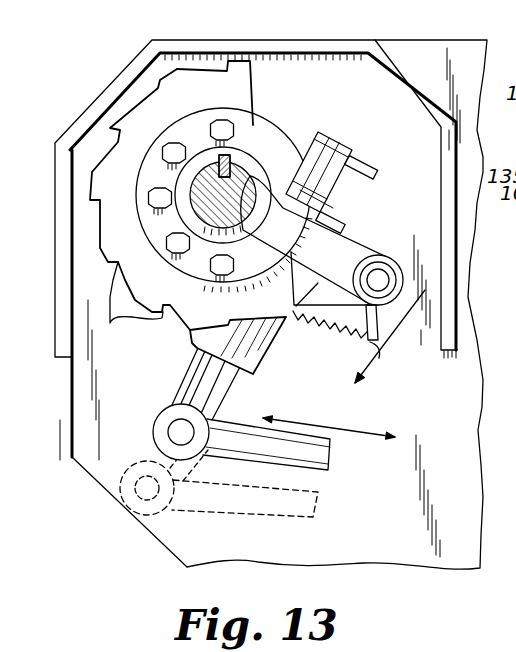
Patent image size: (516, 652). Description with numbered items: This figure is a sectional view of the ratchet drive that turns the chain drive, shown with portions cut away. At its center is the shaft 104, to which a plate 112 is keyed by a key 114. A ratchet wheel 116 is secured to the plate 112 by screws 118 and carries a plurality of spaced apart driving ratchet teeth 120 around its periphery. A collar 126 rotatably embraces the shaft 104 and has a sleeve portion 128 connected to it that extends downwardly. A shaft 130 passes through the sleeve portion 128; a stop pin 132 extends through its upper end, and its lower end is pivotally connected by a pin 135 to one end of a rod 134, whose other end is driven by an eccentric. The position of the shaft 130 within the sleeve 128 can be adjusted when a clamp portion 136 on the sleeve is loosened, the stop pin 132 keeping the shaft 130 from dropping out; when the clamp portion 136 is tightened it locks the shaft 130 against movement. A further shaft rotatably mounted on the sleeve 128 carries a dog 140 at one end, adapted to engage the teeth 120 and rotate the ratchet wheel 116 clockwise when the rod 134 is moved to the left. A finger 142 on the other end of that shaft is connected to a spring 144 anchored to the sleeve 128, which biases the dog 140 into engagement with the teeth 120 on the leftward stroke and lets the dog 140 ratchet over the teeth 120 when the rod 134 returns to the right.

The shaft 104 is at (258, 175).
The plate 112 is at (193, 123).
The key 114 is at (233, 156).
The ratchet wheel 116 is at (238, 78).
The screws 118 is at (152, 188).
The driving ratchet teeth 120 is at (105, 128).
The collar 126 is at (262, 198).
The sleeve portion 128 is at (264, 349).
The shaft 130 is at (340, 150).
The stop pin 132 is at (375, 170).
The rod 134 is at (320, 458).
The pin 135 is at (172, 430).
The clamp portion 136 is at (380, 280).
The dog 140 is at (384, 308).
The finger 142 is at (380, 325).
The spring 144 is at (352, 333).